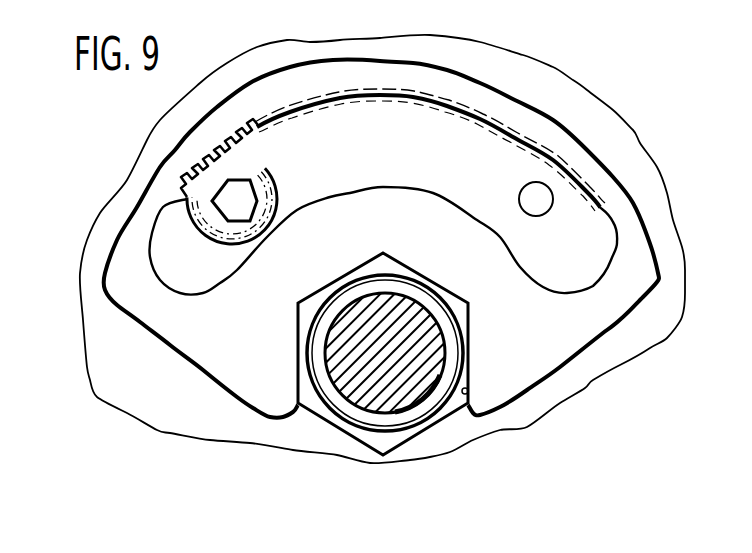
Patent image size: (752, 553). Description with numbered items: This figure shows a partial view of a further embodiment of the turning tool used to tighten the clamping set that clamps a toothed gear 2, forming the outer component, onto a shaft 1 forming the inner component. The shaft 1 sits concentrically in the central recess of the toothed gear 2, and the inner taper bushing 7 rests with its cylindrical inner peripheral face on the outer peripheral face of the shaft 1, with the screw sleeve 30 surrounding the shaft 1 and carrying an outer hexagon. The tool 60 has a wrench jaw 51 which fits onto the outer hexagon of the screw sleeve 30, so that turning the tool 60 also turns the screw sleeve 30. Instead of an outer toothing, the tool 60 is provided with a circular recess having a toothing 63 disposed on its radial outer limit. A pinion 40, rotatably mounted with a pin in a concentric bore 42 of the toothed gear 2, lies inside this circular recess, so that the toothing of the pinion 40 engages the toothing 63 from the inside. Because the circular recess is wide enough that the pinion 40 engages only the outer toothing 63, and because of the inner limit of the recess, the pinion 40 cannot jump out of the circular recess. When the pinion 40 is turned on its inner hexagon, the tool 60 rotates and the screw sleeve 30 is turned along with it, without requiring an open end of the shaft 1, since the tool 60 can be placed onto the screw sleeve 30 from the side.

The shaft 1 is at (332, 356).
The toothed gear 2 is at (585, 94).
The inner taper bushing 7 is at (420, 298).
The screw sleeve 30 is at (310, 307).
The pinion 40 is at (283, 193).
The concentric bore 42 is at (542, 212).
The wrench jaw 51 is at (468, 385).
The tool 60 is at (662, 277).
The toothing 63 is at (470, 118).